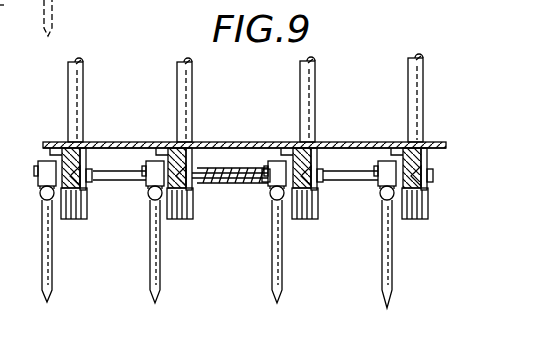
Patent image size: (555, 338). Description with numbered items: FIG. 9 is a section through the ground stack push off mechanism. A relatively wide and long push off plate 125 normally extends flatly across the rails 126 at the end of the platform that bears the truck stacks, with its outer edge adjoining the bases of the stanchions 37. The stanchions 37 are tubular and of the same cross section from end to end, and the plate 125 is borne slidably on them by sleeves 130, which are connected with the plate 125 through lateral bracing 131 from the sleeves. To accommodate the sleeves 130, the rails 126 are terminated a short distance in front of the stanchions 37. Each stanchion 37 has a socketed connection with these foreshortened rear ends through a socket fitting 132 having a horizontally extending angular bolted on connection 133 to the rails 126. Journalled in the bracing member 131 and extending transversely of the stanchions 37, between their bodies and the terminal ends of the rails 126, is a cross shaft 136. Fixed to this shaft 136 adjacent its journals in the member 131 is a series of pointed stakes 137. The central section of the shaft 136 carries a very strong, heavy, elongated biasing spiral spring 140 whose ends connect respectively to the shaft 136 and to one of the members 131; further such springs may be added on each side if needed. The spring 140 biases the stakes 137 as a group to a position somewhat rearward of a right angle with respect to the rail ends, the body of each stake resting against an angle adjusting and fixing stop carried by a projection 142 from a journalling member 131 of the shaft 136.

The stanchion 37 is at (176, 80).
The push off plate 125 is at (106, 141).
The rail 126 is at (68, 145).
The sleeve 130 is at (88, 150).
The lateral bracing 131 is at (162, 150).
The socket fitting 132 is at (81, 221).
The angular bolted on connection 133 is at (88, 186).
The cross shaft 136 is at (233, 188).
The pointed stake 137 is at (47, 296).
The biasing spiral spring 140 is at (232, 193).
The projection 142 is at (148, 203).